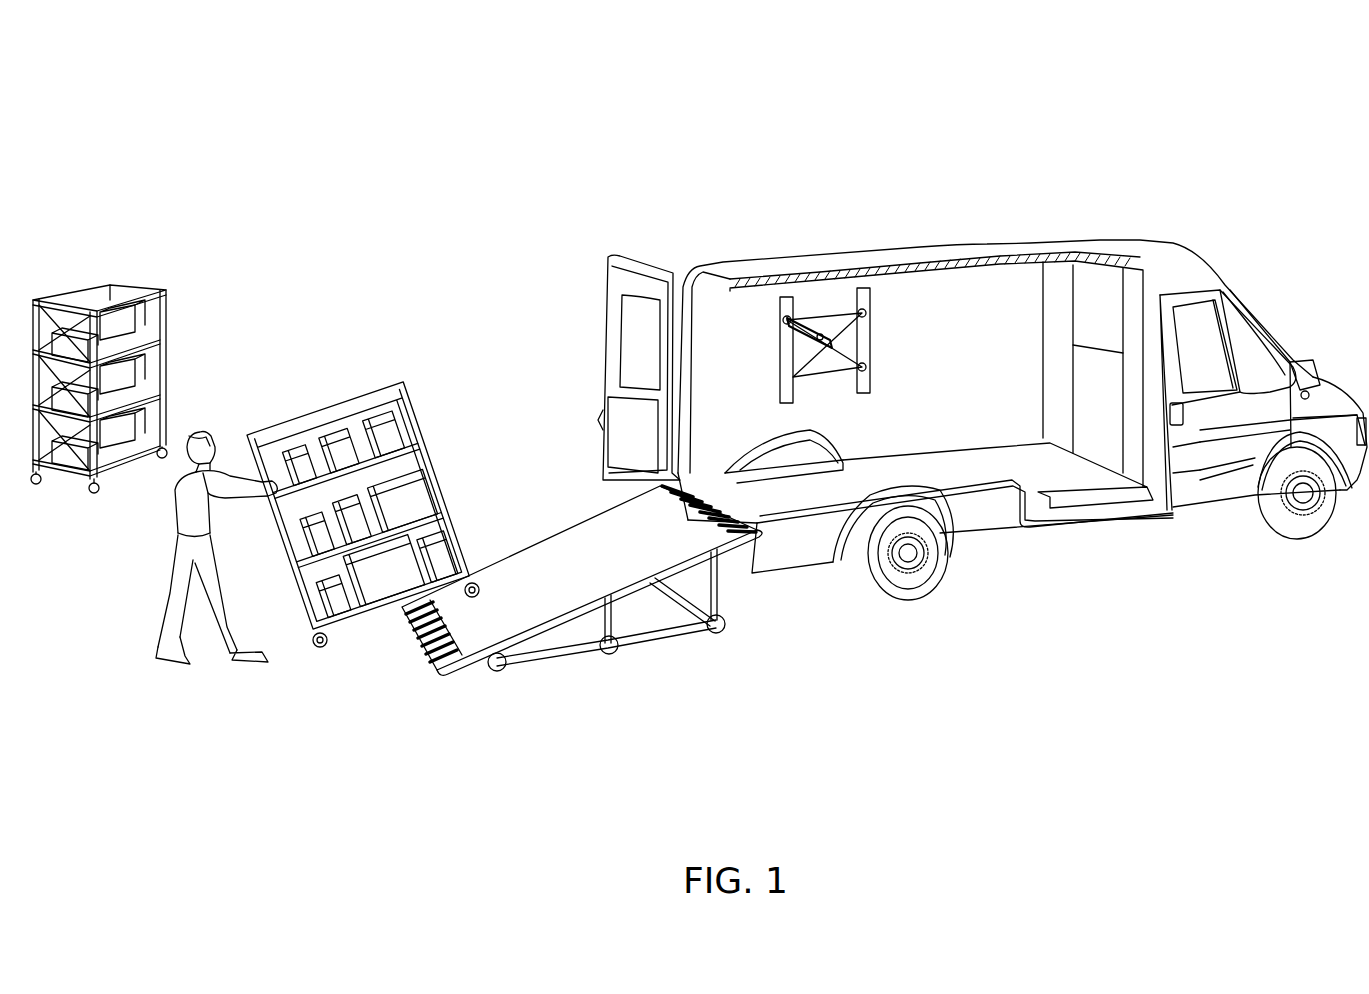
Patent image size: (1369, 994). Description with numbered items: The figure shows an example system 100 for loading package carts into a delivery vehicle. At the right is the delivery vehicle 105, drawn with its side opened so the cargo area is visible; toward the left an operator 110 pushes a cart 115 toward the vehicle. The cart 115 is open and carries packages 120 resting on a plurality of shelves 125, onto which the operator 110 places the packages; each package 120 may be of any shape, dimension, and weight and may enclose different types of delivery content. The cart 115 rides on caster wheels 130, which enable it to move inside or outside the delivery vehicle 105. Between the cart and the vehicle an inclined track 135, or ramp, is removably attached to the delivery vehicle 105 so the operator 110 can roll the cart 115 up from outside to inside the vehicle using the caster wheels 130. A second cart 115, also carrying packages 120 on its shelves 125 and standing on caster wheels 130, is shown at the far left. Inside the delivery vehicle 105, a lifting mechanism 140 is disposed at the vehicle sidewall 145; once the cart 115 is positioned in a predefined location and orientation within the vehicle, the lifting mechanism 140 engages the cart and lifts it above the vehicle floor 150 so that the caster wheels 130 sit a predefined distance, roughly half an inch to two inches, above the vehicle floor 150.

The system 100 is at (168, 110).
The delivery vehicle 105 is at (1031, 242).
The operator 110 is at (204, 432).
The cart 115 is at (135, 290).
The package 120 is at (420, 425).
The shelves 125 is at (452, 506).
The caster wheels 130 is at (99, 494).
The inclined track 135 is at (553, 595).
The lifting mechanism 140 is at (782, 300).
The vehicle sidewall 145 is at (935, 306).
The vehicle floor 150 is at (1040, 473).